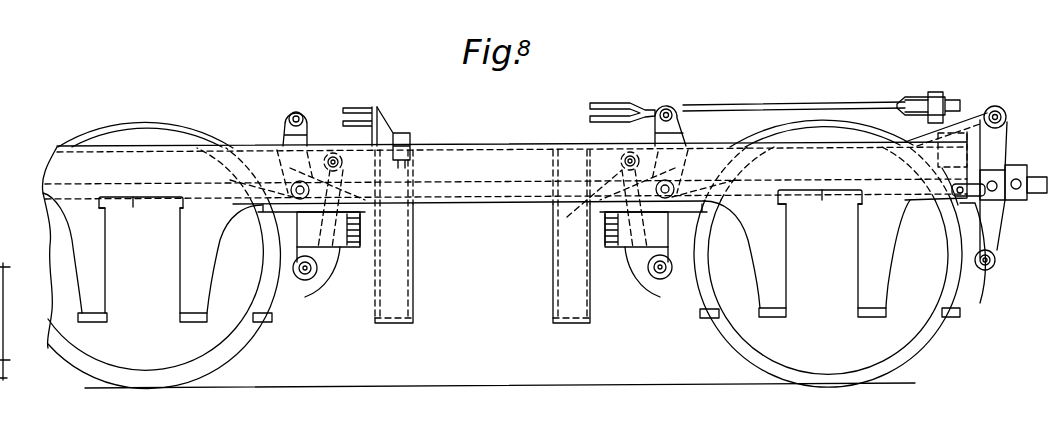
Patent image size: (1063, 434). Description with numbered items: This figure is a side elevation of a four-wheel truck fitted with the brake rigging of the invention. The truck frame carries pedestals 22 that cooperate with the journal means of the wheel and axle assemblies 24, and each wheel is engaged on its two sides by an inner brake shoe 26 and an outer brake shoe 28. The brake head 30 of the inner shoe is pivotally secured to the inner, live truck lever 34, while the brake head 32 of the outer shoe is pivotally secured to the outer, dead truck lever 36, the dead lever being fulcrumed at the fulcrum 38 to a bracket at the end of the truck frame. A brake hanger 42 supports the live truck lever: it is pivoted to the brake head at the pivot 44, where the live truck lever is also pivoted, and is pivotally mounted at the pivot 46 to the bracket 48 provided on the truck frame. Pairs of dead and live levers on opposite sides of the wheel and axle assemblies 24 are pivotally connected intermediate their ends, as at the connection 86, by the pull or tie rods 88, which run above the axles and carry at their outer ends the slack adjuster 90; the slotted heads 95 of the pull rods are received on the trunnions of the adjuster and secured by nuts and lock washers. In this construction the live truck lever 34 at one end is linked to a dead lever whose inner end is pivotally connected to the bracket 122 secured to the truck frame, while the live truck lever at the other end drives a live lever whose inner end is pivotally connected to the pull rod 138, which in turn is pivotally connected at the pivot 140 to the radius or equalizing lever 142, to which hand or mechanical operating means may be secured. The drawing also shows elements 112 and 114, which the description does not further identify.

The pedestals 22 is at (858, 270).
The wheel and axle assemblies 24 is at (895, 343).
The inner brake shoes 26 is at (705, 318).
The outer brake shoes 28 is at (958, 313).
The brake head 30 is at (672, 292).
The brake head 32 is at (983, 287).
The inner truck lever 34 is at (290, 130).
The outer truck lever 36 is at (1008, 140).
The fulcrum 38 is at (1001, 108).
The brake hanger 42 is at (375, 206).
The pivot 44 is at (652, 270).
The pivot 46 is at (630, 152).
The bracket 48 is at (370, 107).
The pivot connection 86 is at (670, 184).
The pull or tie rods 88 is at (480, 211).
The slack adjuster 90 is at (1032, 194).
The slotted heads 95 is at (998, 250).
The bracket 112 is at (950, 205).
The spring housing 114 is at (616, 243).
The bracket 122 is at (392, 128).
The pull rod 138 is at (776, 105).
The pivot connection 140 is at (932, 96).
The radius or equalizing lever 142 is at (955, 98).